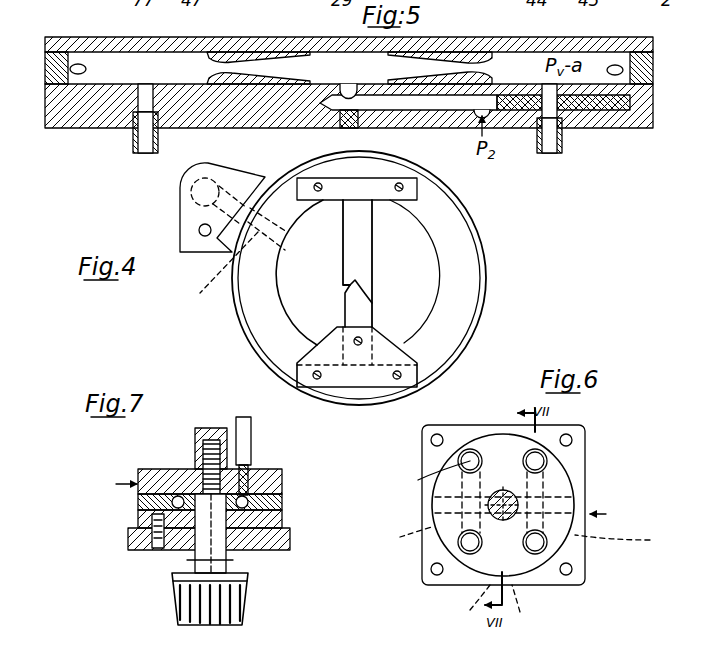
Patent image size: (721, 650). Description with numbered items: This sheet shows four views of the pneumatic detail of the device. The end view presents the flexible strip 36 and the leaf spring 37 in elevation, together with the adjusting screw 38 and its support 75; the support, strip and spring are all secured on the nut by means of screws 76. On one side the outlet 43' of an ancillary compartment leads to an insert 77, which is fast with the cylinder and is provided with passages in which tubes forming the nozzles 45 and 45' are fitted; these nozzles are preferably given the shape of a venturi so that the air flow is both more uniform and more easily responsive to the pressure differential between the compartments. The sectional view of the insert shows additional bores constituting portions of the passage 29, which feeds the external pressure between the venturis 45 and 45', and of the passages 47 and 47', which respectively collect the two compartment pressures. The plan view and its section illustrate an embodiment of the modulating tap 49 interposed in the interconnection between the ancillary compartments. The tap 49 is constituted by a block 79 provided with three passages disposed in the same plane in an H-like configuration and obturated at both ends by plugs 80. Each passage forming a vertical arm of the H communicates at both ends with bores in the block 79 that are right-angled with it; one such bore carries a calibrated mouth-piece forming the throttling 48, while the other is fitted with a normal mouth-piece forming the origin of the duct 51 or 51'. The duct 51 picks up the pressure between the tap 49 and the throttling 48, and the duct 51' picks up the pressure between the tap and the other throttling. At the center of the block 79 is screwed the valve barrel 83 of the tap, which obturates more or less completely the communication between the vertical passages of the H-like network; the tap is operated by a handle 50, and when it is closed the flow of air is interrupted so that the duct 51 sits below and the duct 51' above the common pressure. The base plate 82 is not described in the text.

In FIG. 5, the passage 29 is at (382, 105).
In FIG. 4, the flexible strip 36 is at (363, 257).
In FIG. 4, the leaf spring 37 is at (360, 313).
In FIG. 4, the adjusting screw 38 is at (362, 343).
In FIG. 4, the outlet 43' is at (216, 270).
In FIG. 5, the nozzle 45 is at (440, 42).
In FIG. 5, the nozzle 45' is at (258, 44).
In FIG. 5, the passage 47 is at (563, 139).
In FIG. 6, the passage 47 is at (588, 499).
In FIG. 5, the passage 47' is at (133, 141).
In FIG. 6, the passage 47' is at (493, 429).
In FIG. 7, the throttling 48 is at (248, 462).
In FIG. 6, the throttling 48 is at (535, 462).
In FIG. 7, the tap 49 is at (113, 484).
In FIG. 6, the tap 49 is at (611, 515).
In FIG. 7, the handle 50 is at (172, 608).
In FIG. 6, the duct 51 is at (519, 573).
In FIG. 7, the duct 51' is at (177, 461).
In FIG. 6, the duct 51' is at (444, 544).
In FIG. 4, the support 75 is at (400, 376).
In FIG. 4, the screws 76 is at (318, 191).
In FIG. 4, the insert 77 is at (212, 164).
In FIG. 7, the block 79 is at (265, 510).
In FIG. 7, the plugs 80 is at (140, 497).
In FIG. 6, the plugs 80 is at (524, 580).
In FIG. 7, the base plate 82 is at (276, 543).
In FIG. 7, the valve barrel 83 is at (178, 548).
In FIG. 6, the valve barrel 83 is at (512, 488).